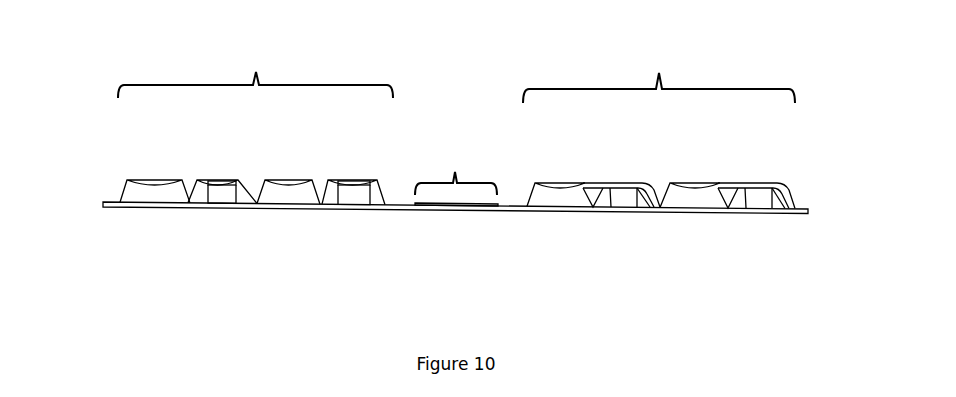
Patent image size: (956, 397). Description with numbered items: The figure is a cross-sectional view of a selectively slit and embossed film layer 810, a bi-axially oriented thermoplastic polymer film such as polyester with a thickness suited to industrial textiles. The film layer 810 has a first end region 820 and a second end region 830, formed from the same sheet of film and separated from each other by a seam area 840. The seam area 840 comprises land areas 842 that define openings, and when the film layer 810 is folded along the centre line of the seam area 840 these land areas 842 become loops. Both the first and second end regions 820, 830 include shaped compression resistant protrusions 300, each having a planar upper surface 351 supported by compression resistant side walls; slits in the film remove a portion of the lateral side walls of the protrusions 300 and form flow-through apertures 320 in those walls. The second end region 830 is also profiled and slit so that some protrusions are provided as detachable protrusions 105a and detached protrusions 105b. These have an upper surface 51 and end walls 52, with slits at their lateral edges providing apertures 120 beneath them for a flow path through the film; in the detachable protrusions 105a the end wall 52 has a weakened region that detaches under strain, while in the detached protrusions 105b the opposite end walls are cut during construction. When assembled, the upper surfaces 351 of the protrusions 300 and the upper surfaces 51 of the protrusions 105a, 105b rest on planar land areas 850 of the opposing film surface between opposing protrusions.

The film layer 810 is at (147, 266).
The second end region 830 is at (255, 70).
The first end region 820 is at (659, 77).
The seam area 840 is at (456, 168).
The land areas 842 is at (455, 207).
The planar land areas 850 is at (802, 213).
The compression resistant protrusions 300 is at (170, 164).
The planar upper surfaces 351 is at (290, 180).
The flow-through apertures 320 is at (348, 198).
The detachable protrusions 105a is at (593, 187).
The detached protrusions 105b is at (597, 188).
The apertures 120 is at (616, 211).
The upper surface 51 is at (623, 188).
The end wall 52 is at (778, 204).